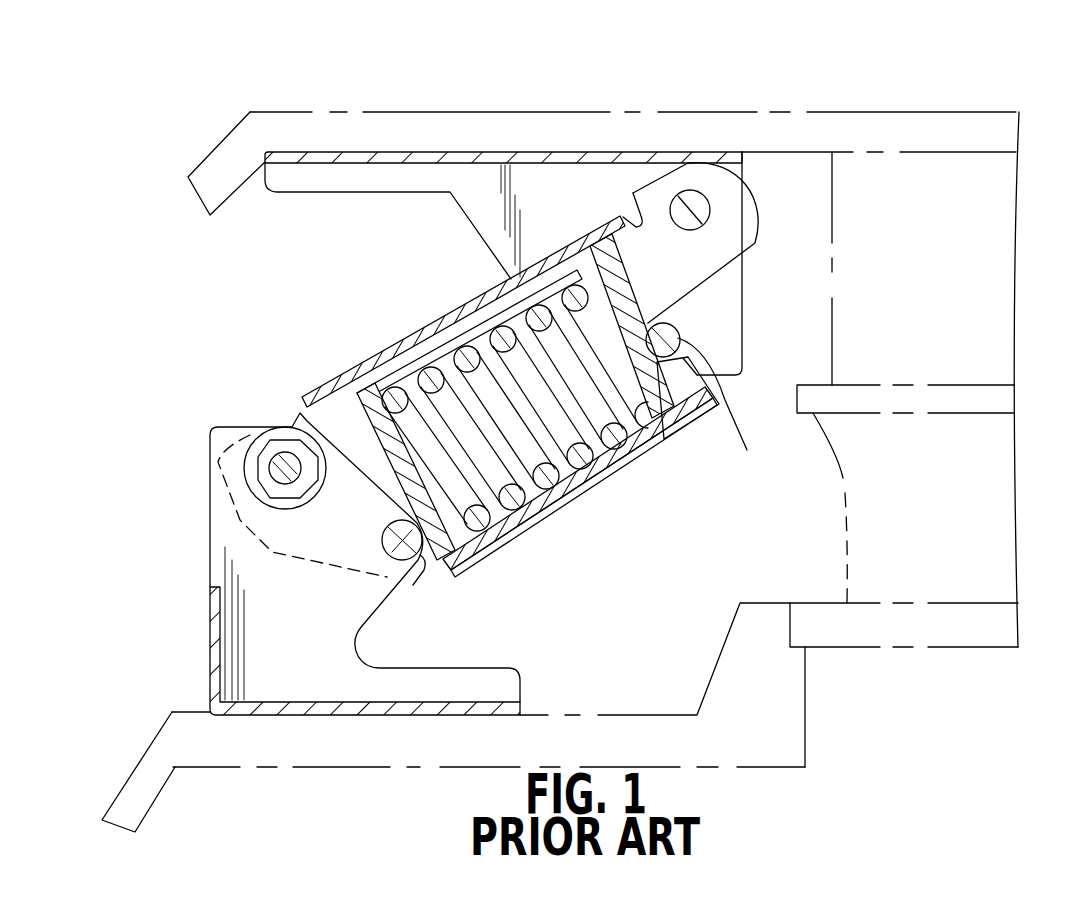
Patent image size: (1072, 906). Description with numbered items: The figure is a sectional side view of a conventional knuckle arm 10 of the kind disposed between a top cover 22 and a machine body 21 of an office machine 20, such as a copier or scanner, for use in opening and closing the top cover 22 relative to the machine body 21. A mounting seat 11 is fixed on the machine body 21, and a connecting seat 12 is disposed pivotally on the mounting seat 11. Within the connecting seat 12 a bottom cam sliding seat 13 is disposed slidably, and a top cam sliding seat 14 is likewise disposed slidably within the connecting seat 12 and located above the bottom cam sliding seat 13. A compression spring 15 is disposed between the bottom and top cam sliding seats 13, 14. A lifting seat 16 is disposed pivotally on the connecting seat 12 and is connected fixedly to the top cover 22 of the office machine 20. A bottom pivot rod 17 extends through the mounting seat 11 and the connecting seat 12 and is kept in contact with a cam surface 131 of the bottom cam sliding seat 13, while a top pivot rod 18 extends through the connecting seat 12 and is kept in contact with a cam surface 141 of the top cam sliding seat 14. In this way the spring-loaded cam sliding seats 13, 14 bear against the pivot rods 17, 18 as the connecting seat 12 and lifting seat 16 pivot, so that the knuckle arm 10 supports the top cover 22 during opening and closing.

The knuckle arm 10 is at (507, 414).
The mounting seat 11 is at (213, 655).
The connecting seat 12 is at (552, 520).
The bottom cam sliding seat 13 is at (475, 560).
The cam surface 131 is at (443, 563).
The top cam sliding seat 14 is at (680, 440).
The cam surface 141 is at (662, 397).
The compression spring 15 is at (587, 495).
The lifting seat 16 is at (432, 157).
The bottom pivot rod 17 is at (403, 561).
The top pivot rod 18 is at (690, 348).
The office machine 20 is at (957, 648).
The machine body 21 is at (227, 753).
The top cover 22 is at (730, 112).